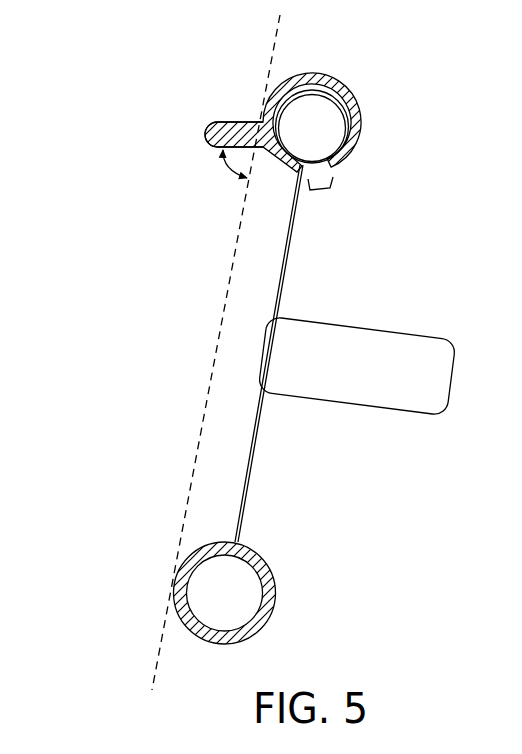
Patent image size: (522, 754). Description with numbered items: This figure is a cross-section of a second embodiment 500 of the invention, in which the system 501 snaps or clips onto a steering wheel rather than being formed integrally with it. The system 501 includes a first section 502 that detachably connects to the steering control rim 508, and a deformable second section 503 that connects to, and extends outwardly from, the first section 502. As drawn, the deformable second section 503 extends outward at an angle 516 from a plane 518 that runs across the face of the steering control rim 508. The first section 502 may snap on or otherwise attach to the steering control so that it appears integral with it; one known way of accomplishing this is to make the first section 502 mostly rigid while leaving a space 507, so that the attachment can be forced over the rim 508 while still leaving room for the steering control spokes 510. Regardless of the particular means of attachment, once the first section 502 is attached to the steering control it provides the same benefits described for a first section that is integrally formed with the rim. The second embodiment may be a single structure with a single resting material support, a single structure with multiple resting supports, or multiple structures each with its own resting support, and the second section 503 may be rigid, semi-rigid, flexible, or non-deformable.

The second embodiment 500 is at (104, 88).
The system 501 is at (237, 88).
The first section 502 is at (381, 97).
The deformable second section 503 is at (202, 148).
The space 507 is at (323, 191).
The steering control rim 508 is at (305, 87).
The steering control spokes 510 is at (282, 270).
The angle 516 is at (227, 167).
The plane 518 is at (160, 670).